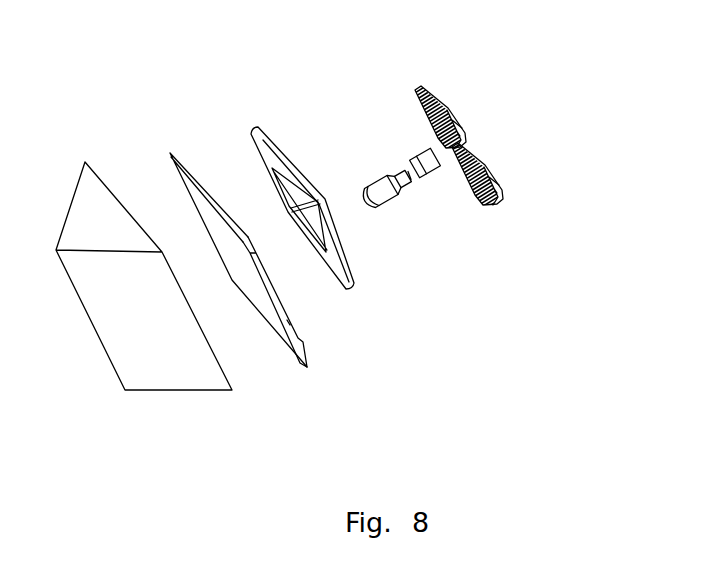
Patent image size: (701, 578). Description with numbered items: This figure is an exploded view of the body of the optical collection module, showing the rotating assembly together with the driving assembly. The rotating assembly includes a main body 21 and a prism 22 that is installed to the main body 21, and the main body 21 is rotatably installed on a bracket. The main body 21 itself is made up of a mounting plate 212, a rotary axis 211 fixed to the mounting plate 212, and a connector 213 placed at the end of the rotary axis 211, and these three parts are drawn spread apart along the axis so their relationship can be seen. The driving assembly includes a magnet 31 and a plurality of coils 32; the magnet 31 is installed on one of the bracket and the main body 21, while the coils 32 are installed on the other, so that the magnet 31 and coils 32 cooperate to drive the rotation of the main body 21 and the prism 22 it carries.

The main body 21 is at (381, 309).
The rotary axis 211 is at (380, 192).
The mounting plate 212 is at (305, 345).
The connector 213 is at (428, 166).
The prism 22 is at (103, 203).
The magnet 31 is at (268, 135).
The coils 32 is at (421, 86).